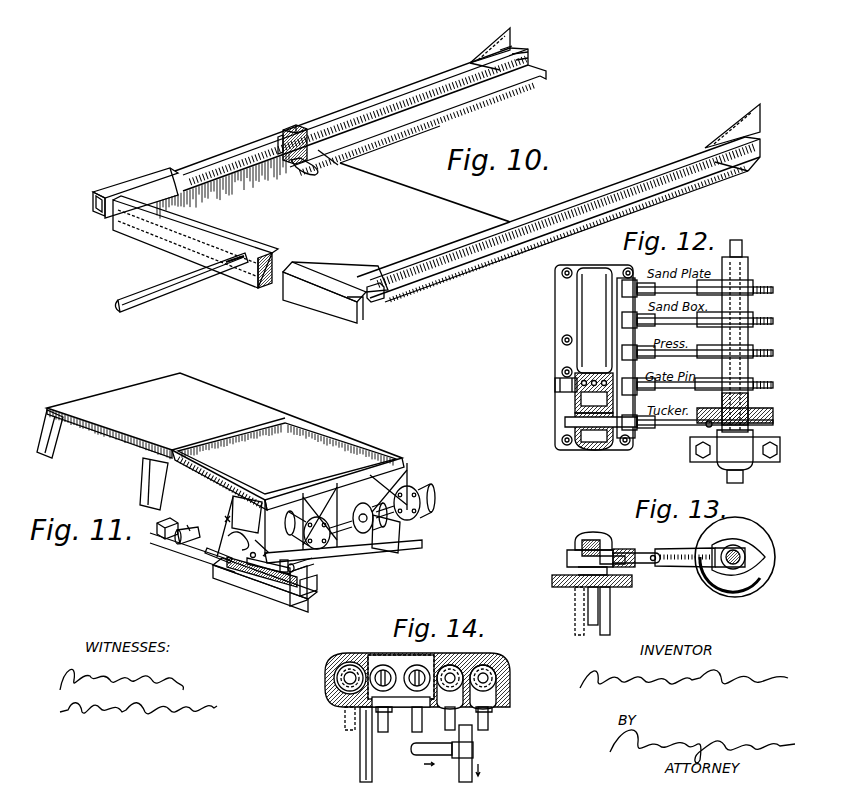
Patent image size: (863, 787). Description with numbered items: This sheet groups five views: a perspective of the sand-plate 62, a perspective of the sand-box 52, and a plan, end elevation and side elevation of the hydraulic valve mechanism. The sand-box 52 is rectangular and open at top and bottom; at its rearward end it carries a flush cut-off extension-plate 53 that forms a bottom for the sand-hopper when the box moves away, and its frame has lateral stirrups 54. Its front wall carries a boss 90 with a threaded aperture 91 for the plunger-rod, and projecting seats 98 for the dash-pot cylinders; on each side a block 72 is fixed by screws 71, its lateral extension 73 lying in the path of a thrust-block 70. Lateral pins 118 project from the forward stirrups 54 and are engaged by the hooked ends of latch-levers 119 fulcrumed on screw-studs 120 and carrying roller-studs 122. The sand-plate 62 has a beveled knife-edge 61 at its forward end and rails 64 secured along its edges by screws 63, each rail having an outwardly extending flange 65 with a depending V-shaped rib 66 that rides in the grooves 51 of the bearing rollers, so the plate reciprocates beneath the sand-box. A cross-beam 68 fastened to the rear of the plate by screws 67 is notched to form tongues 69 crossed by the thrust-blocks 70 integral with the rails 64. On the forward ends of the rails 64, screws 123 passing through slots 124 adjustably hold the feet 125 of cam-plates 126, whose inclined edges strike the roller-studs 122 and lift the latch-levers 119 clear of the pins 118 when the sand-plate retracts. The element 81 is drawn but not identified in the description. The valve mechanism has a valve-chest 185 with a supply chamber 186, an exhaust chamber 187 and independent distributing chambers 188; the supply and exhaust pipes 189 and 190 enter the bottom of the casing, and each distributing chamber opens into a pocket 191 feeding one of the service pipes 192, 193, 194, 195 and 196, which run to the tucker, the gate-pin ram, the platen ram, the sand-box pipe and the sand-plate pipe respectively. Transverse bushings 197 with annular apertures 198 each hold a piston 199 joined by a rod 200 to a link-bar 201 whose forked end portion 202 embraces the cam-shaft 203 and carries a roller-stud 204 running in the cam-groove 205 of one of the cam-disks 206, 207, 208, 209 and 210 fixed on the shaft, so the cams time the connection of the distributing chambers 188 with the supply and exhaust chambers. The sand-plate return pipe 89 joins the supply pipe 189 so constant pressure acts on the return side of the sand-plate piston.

In FIG. 11, the grooves 51 is at (153, 500).
In FIG. 11, the sand-box 52 is at (288, 464).
In FIG. 11, the cut-off extension-plate 53 is at (224, 436).
In FIG. 11, the lateral stirrups 54 is at (43, 458).
In FIG. 10, the knife-edge 61 is at (389, 183).
In FIG. 11, the knife-edge 61 is at (284, 603).
In FIG. 10, the sand-plate 62 is at (735, 165).
In FIG. 11, the sand-plate 62 is at (300, 604).
In FIG. 10, the screws 63 is at (302, 162).
In FIG. 10, the rails 64 is at (370, 128).
In FIG. 10, the flange 65 is at (290, 128).
In FIG. 10, the V-shaped rib 66 is at (287, 142).
In FIG. 10, the screws 67 is at (267, 288).
In FIG. 10, the cross-beam 68 is at (210, 237).
In FIG. 10, the tongue 69 is at (367, 303).
In FIG. 10, the thrust-blocks 70 is at (132, 182).
In FIG. 11, the screws 71 is at (194, 537).
In FIG. 11, the block 72 is at (187, 528).
In FIG. 11, the lateral extension 73 is at (157, 531).
In FIG. 10, the operating rod 81 is at (148, 301).
In FIG. 14, the sand-plate return fluid pipe 89 is at (420, 757).
In FIG. 11, the boss 90 is at (360, 516).
In FIG. 11, the threaded aperture 91 is at (368, 524).
In FIG. 11, the projecting seats 98 is at (310, 530).
In FIG. 11, the lateral pins 118 is at (225, 555).
In FIG. 11, the latch-levers 119 is at (260, 536).
In FIG. 11, the screw-studs 120 is at (312, 561).
In FIG. 11, the roller-studs 122 is at (265, 563).
In FIG. 10, the screws 123 is at (516, 46).
In FIG. 10, the slots 124 is at (527, 59).
In FIG. 10, the feet 125 is at (520, 54).
In FIG. 11, the feet 125 is at (312, 587).
In FIG. 10, the cam-plates 126 is at (498, 43).
In FIG. 11, the cam-plates 126 is at (272, 583).
In FIG. 12, the valve-chest 185 is at (594, 320).
In FIG. 13, the valve-chest 185 is at (589, 534).
In FIG. 12, the supply chamber 186 is at (606, 449).
In FIG. 13, the supply chamber 186 is at (614, 548).
In FIG. 12, the exhaust chamber 187 is at (586, 449).
In FIG. 13, the exhaust chamber 187 is at (582, 541).
In FIG. 13, the distributing chambers 188 is at (607, 538).
In FIG. 14, the distributing chambers 188 is at (403, 664).
In FIG. 13, the supply pipe 189 is at (608, 612).
In FIG. 14, the supply pipe 189 is at (473, 762).
In FIG. 13, the exhaust pipe 190 is at (575, 610).
In FIG. 14, the exhaust pipe 190 is at (362, 731).
In FIG. 14, the pocket 191 is at (388, 712).
In FIG. 14, the service pipe 192 is at (345, 720).
In FIG. 14, the service pipe 193 is at (386, 728).
In FIG. 14, the service pipe 194 is at (421, 726).
In FIG. 14, the service pipe 195 is at (448, 712).
In FIG. 14, the service pipe 196 is at (488, 727).
In FIG. 12, the transverse bushings 197 is at (608, 392).
In FIG. 14, the transverse bushings 197 is at (345, 665).
In FIG. 12, the apertures 198 is at (572, 386).
In FIG. 13, the piston 199 is at (618, 567).
In FIG. 13, the rod 200 is at (638, 556).
In FIG. 13, the link-bar 201 is at (688, 563).
In FIG. 13, the forked end portion 202 is at (733, 570).
In FIG. 13, the cam-shaft 203 is at (742, 560).
In FIG. 13, the roller-stud 204 is at (708, 557).
In FIG. 12, the cam-groove 205 is at (762, 425).
In FIG. 13, the cam-groove 205 is at (750, 536).
In FIG. 12, the cam-disk 206 is at (760, 418).
In FIG. 12, the cam-disk 207 is at (765, 384).
In FIG. 12, the cam-disk 208 is at (765, 350).
In FIG. 12, the cam-disk 209 is at (765, 317).
In FIG. 12, the cam-disk 210 is at (760, 285).